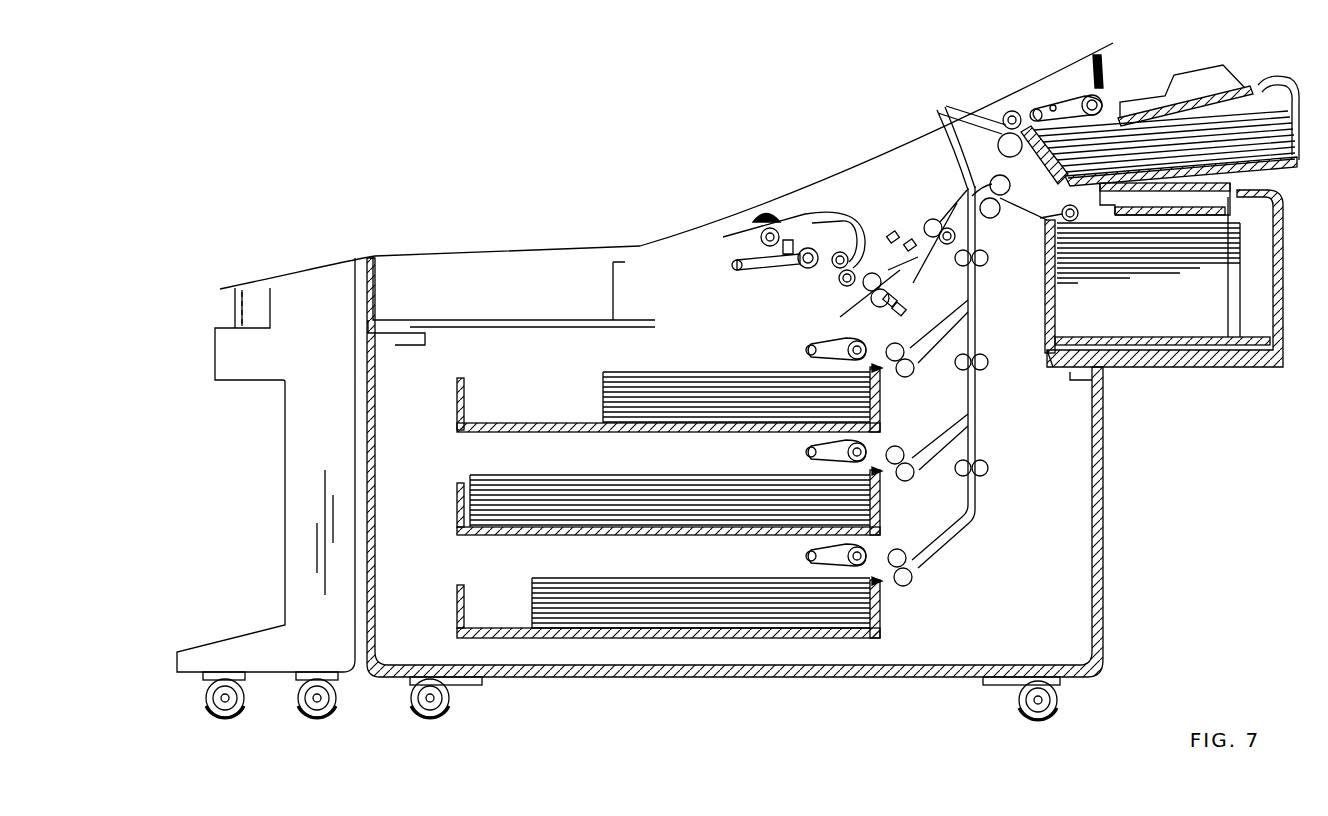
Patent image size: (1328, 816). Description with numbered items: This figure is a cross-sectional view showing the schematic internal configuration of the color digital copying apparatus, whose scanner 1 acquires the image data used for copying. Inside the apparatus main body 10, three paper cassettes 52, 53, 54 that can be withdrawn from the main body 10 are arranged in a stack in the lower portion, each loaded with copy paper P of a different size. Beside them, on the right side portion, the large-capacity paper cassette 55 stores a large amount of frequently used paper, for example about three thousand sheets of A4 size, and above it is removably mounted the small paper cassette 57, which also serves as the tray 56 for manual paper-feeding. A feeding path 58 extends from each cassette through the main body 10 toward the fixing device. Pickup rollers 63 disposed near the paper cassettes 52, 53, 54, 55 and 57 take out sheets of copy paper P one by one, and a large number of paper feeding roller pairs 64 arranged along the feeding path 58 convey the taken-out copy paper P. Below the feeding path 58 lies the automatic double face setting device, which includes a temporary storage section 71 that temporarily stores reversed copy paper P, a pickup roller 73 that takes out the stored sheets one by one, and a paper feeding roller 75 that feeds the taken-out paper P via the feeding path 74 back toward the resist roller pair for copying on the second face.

The scanner 1 is at (1180, 469).
The apparatus main body 10 is at (1105, 513).
The paper cassette 52 is at (463, 400).
The paper cassette 53 is at (463, 505).
The paper cassette 54 is at (463, 614).
The large-capacity paper cassette 55 is at (1196, 335).
The tray 56 is at (1193, 95).
The paper cassette 57 is at (1268, 80).
The feeding path 58 is at (963, 303).
The pickup roller 63 is at (827, 335).
The paper feeding roller pair 64 is at (912, 378).
The temporary storage section 71 is at (680, 298).
The pickup roller 73 is at (800, 276).
The feeding path 74 is at (920, 228).
The paper feeding roller 75 is at (857, 294).
The copy paper P is at (643, 385).